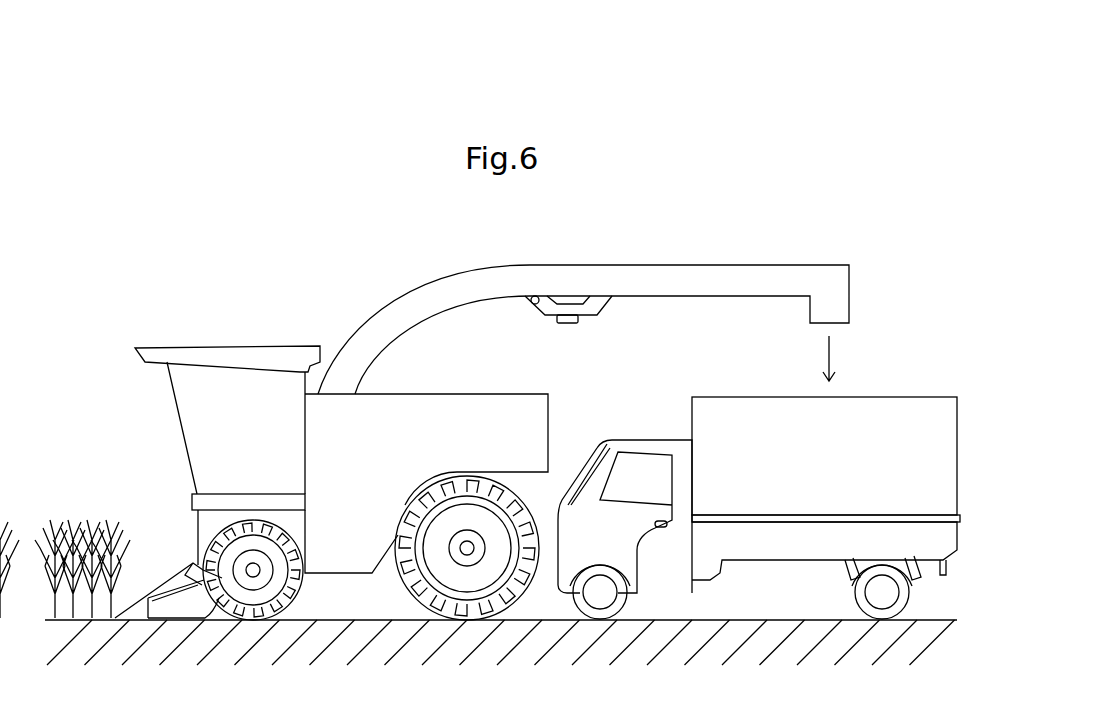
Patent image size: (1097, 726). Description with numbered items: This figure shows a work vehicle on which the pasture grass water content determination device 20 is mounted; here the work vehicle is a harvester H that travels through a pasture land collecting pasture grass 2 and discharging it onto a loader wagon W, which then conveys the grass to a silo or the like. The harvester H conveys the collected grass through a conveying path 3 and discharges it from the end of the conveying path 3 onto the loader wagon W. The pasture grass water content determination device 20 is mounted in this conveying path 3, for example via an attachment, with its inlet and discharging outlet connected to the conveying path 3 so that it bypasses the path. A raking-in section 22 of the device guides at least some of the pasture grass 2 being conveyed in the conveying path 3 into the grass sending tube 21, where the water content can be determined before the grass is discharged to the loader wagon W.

The crop plants 2 is at (106, 526).
The harvester H is at (258, 346).
The conveying path 3 is at (717, 265).
The pasture grass water content determination device 20 is at (607, 331).
The grass sending tube 21 is at (548, 323).
The raking-in section 22 is at (530, 301).
The loader wagon W is at (732, 396).